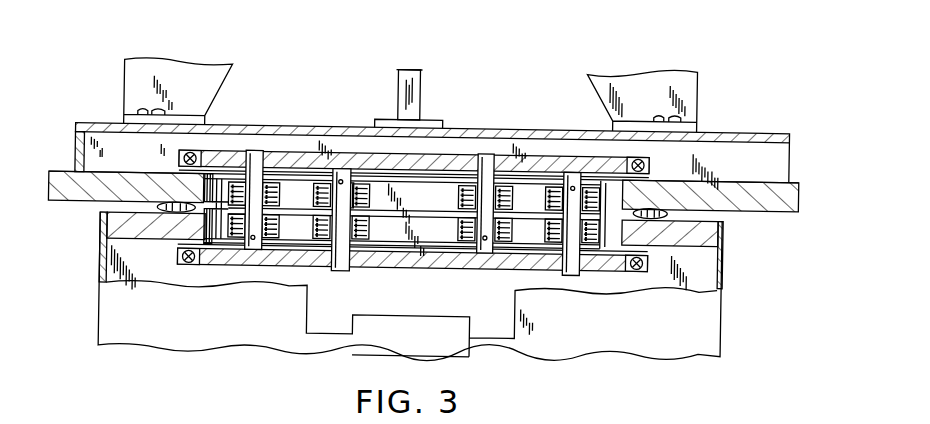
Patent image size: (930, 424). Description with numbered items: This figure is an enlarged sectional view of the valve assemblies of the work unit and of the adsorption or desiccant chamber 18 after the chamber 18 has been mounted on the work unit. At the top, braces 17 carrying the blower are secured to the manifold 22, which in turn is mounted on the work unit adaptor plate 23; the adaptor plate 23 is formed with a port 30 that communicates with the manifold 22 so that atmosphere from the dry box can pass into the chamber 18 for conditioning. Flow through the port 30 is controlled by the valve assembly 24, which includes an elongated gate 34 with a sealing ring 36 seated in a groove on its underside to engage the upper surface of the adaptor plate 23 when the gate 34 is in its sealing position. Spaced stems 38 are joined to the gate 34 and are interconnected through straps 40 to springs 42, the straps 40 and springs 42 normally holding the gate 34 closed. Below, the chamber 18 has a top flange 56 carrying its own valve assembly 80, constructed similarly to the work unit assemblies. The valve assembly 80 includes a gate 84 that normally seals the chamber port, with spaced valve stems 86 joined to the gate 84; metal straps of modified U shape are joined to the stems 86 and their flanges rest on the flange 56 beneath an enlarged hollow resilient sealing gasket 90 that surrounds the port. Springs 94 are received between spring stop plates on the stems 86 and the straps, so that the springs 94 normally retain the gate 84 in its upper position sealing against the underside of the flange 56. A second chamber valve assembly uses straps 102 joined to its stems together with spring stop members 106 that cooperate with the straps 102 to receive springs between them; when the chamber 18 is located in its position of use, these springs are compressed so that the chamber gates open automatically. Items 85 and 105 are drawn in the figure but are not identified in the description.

The braces 17 is at (174, 72).
The adsorption or desiccant chamber 18 is at (90, 319).
The manifold 22 is at (73, 153).
The work unit adaptor plate 23 is at (773, 200).
The valve assembly 24 is at (319, 149).
The port 30 is at (208, 198).
The elongated gate 34 is at (441, 163).
The sealing ring 36 is at (197, 160).
The stems 38 is at (252, 255).
The straps 40 is at (271, 189).
The springs 42 is at (526, 190).
The top flange 56 is at (107, 227).
The valve assembly 80 is at (371, 286).
The gate 84 is at (410, 263).
The lower right plate 85 is at (652, 254).
The valve stems 86 is at (362, 248).
The hollow resilient sealing gasket 90 is at (655, 205).
The springs 94 is at (362, 197).
The straps 102 is at (336, 273).
The seal ring 105 is at (602, 153).
The spring stop members 106 is at (361, 188).